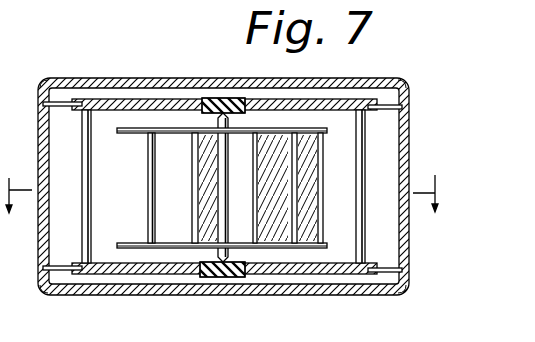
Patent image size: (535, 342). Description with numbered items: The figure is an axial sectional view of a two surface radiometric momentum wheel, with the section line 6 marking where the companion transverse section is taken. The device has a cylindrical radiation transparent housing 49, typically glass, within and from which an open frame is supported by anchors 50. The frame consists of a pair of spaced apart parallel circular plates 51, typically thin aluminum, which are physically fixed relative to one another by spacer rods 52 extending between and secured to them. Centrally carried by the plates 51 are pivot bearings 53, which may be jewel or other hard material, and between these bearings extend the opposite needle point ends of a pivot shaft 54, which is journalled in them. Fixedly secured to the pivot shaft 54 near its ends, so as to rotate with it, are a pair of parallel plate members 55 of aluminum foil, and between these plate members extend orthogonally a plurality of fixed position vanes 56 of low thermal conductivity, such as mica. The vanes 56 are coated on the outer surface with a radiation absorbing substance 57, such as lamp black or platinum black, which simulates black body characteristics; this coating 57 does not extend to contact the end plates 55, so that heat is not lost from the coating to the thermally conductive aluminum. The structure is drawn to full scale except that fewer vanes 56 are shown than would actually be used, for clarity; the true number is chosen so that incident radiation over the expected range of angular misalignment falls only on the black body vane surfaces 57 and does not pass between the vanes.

The radiation transparent housing 49 is at (403, 247).
The anchors 50 is at (390, 95).
The circular plates 51 is at (142, 103).
The spacer rods 52 is at (91, 143).
The pivot bearings 53 is at (213, 99).
The pivot shaft 54 is at (228, 217).
The plate members 55 is at (121, 127).
The vanes 56 is at (205, 150).
The radiation absorbing substance 57 is at (148, 184).
The section line 6— 6 is at (220, 209).